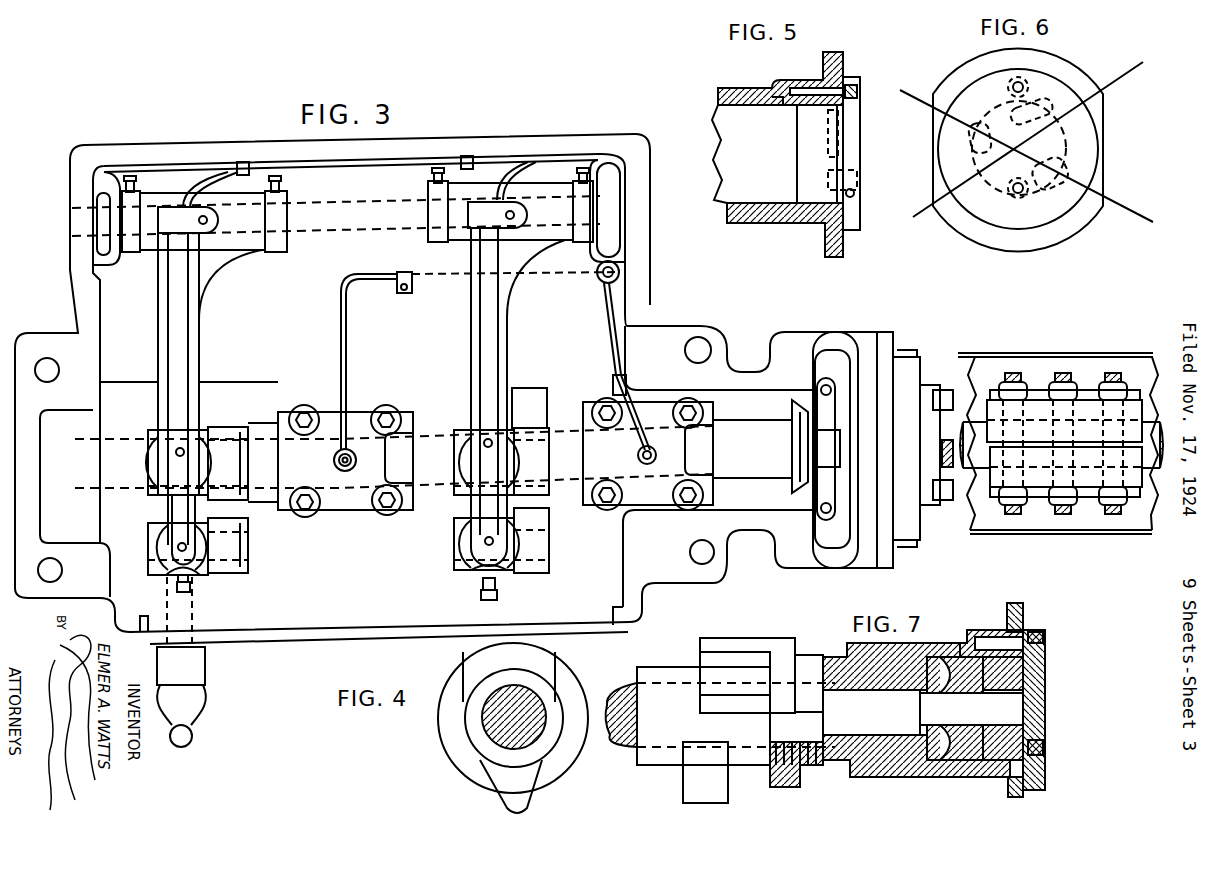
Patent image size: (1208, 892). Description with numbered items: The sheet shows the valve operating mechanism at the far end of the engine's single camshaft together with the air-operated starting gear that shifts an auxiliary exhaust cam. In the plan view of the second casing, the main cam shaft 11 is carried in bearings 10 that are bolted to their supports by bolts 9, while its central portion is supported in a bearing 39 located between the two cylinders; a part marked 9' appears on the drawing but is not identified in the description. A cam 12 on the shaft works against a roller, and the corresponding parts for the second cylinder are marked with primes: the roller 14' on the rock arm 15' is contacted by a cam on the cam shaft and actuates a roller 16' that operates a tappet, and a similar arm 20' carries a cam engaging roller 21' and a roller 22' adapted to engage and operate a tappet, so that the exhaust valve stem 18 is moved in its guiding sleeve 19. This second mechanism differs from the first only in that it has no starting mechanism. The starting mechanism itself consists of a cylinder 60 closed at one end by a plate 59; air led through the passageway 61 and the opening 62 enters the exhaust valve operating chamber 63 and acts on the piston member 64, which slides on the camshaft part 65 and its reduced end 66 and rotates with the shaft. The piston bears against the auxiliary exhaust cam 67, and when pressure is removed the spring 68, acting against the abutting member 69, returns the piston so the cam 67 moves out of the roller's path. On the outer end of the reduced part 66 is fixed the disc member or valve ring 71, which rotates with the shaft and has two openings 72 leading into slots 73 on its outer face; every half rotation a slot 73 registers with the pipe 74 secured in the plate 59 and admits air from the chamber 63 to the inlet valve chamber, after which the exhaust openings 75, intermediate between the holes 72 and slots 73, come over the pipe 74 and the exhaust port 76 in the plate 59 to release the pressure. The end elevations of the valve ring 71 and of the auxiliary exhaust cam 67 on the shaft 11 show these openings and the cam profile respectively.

In FIG. 3, the bolts 9 is at (496, 448).
In FIG. 3, the handle knob 9' is at (187, 662).
In FIG. 3, the bearings 10 is at (357, 415).
In FIG. 3, the main cam shaft 11 is at (432, 443).
In FIG. 4, the main cam shaft 11 is at (490, 717).
In FIG. 7, the main cam shaft 11 is at (627, 690).
In FIG. 4, the cam 12 is at (513, 797).
In FIG. 7, the cam 12 is at (690, 781).
In FIG. 3, the roller 14' is at (228, 450).
In FIG. 3, the rock arm 15' is at (210, 368).
In FIG. 3, the roller 16' is at (228, 559).
In FIG. 6, the valve stem 18 is at (1030, 159).
In FIG. 6, the guiding sleeve 19 is at (1034, 148).
In FIG. 3, the arm 20' is at (516, 364).
In FIG. 3, the cam engaging roller 21' is at (547, 441).
In FIG. 3, the roller 22' is at (537, 551).
In FIG. 3, the bearing 39 is at (1090, 407).
In FIG. 5, the plate 59 is at (853, 130).
In FIG. 7, the plate 59 is at (1045, 673).
In FIG. 5, the cylinder 60 is at (845, 249).
In FIG. 7, the cylinder 60 is at (1025, 614).
In FIG. 5, the passageway 61 is at (812, 90).
In FIG. 6, the passageway 61 is at (1010, 82).
In FIG. 7, the passageway 61 is at (1010, 640).
In FIG. 5, the opening 62 is at (785, 100).
In FIG. 7, the opening 62 is at (972, 650).
In FIG. 7, the exhaust valve operating chamber 63 is at (955, 660).
In FIG. 7, the piston member 64 is at (846, 770).
In FIG. 7, the camshaft part 65 is at (843, 690).
In FIG. 7, the reduced part 66 is at (930, 705).
In FIG. 4, the auxiliary exhaust cam 67 is at (487, 653).
In FIG. 7, the auxiliary exhaust cam 67 is at (732, 645).
In FIG. 7, the spring 68 is at (775, 775).
In FIG. 7, the abutting member 69 is at (660, 668).
In FIG. 5, the disc member 71 is at (805, 118).
In FIG. 7, the disc member 71 is at (1010, 735).
In FIG. 6, the openings 72 is at (980, 125).
In FIG. 7, the openings 72 is at (1030, 730).
In FIG. 6, the slots 73 is at (1040, 190).
In FIG. 7, the slots 73 is at (1023, 660).
In FIG. 6, the pipe 74 is at (1020, 193).
In FIG. 6, the exhaust openings 75 is at (1043, 120).
In FIG. 5, the exhaust port 76 is at (855, 193).
In FIG. 6, the exhaust port 76 is at (960, 177).